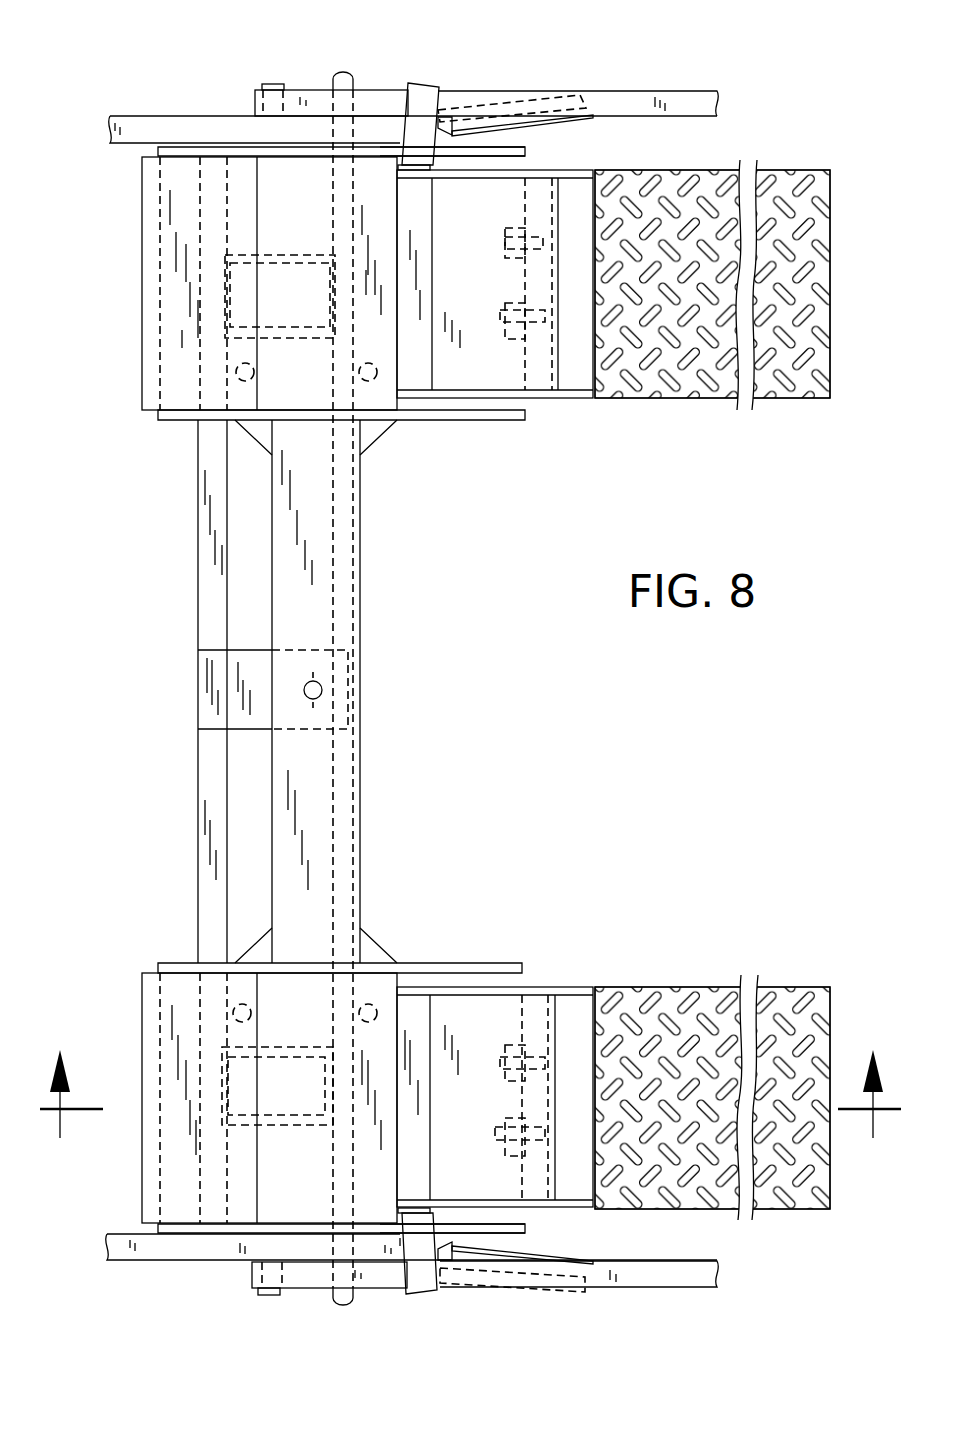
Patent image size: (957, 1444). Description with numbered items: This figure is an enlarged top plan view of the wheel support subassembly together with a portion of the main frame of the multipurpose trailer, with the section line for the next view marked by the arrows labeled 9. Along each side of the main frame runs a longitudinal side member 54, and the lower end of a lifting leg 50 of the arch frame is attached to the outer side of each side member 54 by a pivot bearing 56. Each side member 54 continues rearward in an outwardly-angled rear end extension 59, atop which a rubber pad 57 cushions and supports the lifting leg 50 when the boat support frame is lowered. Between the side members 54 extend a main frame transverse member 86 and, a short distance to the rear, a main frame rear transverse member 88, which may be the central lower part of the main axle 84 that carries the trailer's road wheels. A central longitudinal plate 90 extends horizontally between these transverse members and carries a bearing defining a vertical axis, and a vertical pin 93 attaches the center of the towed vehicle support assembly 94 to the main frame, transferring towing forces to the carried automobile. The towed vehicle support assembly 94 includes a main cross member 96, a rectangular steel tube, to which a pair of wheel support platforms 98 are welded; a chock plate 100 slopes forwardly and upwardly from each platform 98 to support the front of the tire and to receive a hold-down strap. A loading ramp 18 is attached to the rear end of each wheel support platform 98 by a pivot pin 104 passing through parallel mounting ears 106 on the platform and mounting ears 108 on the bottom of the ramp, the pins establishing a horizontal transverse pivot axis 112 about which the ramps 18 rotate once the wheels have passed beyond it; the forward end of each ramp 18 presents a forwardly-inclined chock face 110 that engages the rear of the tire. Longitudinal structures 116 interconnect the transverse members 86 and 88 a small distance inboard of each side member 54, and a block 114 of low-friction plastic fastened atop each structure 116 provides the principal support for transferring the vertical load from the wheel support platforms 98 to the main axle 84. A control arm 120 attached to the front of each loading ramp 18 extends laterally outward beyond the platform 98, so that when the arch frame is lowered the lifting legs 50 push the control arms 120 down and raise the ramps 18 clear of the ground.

The loading ramp 18 is at (715, 175).
The lifting leg 50 is at (632, 100).
The longitudinal side member 54 is at (150, 123).
The pivot bearing 56 is at (283, 107).
The rubber pad 57 is at (468, 122).
The rear end extension 59 is at (493, 133).
The main axle 84 is at (347, 1302).
The main frame transverse member 86 is at (197, 553).
The main frame rear transverse member 88 is at (328, 803).
The central longitudinal plate 90 is at (252, 722).
The vertical pin 93 is at (322, 697).
The towed vehicle support assembly 94 is at (362, 577).
The main cross member 96 is at (360, 682).
The wheel support platform 98 is at (283, 196).
The chock plate 100 is at (192, 197).
The pivot pin 104 is at (516, 294).
The mounting ear 106 is at (497, 257).
The mounting ear 108 is at (537, 330).
The chock face 110 is at (410, 210).
The horizontal transverse pivot axis 112 is at (525, 360).
The block 114 is at (290, 268).
The longitudinal structure 116 is at (278, 340).
The control arm 120 is at (423, 80).
The section line 9- 9 is at (466, 1099).